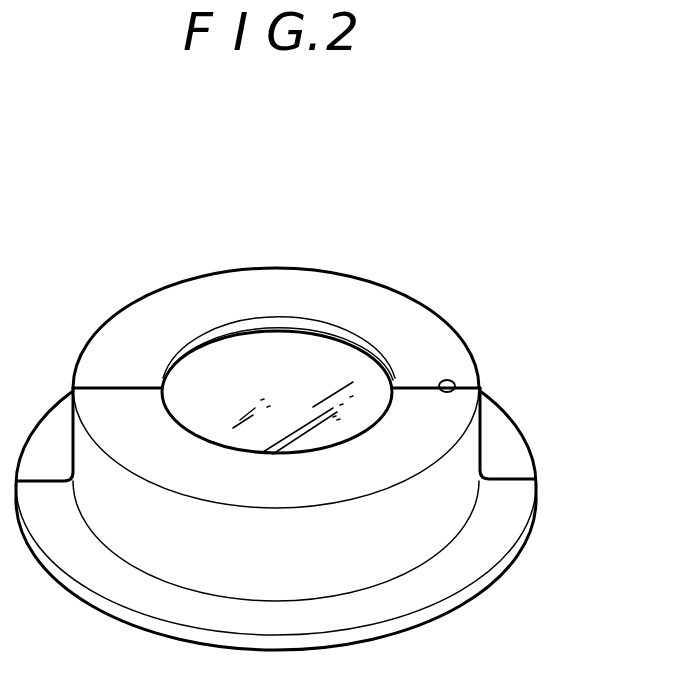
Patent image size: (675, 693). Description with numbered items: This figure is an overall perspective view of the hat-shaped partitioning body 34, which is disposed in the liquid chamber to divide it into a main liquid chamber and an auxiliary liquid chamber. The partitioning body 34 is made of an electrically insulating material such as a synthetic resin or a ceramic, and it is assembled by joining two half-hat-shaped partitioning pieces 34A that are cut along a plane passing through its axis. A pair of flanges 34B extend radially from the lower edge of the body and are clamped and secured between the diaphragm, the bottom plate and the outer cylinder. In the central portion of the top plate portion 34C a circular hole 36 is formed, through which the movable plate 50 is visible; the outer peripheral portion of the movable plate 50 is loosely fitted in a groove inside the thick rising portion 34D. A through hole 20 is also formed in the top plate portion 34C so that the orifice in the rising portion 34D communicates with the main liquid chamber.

The partitioning body 34 is at (506, 364).
The half-hat-shaped partitioning piece 34A is at (262, 284).
The flange 34B is at (423, 597).
The top plate portion 34C is at (102, 366).
The rising portion 34D is at (470, 447).
The circular hole 36 is at (338, 337).
The movable plate 50 is at (222, 368).
The through hole 20 is at (442, 378).